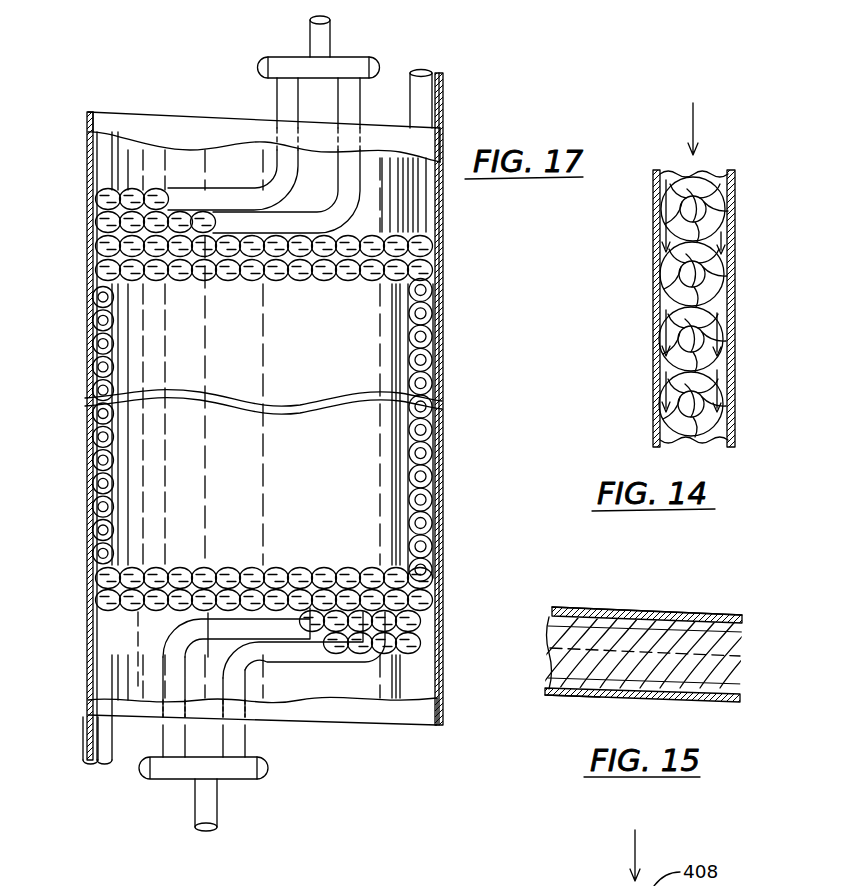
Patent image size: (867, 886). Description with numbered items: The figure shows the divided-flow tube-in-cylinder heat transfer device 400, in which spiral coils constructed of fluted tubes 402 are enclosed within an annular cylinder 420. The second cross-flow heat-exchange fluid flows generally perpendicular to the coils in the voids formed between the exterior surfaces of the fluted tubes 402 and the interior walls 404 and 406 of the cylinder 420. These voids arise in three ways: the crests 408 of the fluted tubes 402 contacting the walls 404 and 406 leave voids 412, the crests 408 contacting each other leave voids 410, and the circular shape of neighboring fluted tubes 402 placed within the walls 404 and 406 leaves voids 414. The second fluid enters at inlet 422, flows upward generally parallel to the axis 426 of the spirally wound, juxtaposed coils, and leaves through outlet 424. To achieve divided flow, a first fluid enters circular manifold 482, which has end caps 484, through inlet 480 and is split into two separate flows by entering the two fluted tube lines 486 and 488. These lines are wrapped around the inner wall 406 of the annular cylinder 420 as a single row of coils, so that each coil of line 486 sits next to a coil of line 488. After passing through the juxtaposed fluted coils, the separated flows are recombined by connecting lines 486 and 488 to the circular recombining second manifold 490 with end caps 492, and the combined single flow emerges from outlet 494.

In FIG. 17, the divided-flow tube-in-cylinder heat transfer device 400 is at (462, 383).
In FIG. 17, the fluted tubes 402 is at (305, 575).
In FIG. 14, the fluted tubes 402 is at (718, 268).
In FIG. 15, the fluted tubes 402 is at (724, 652).
In FIG. 17, the interior wall of the annular cylinder 404 is at (443, 320).
In FIG. 14, the interior wall of the annular cylinder 404 is at (732, 221).
In FIG. 15, the interior wall of the annular cylinder 404 is at (670, 698).
In FIG. 17, the inner wall of the annular cylinder 406 is at (404, 433).
In FIG. 14, the inner wall of the annular cylinder 406 is at (653, 226).
In FIG. 15, the inner wall of the annular cylinder 406 is at (652, 608).
In FIG. 14, the crests of the fluted tubes 408 is at (734, 312).
In FIG. 15, the crests of the fluted tubes 408 is at (585, 588).
In FIG. 17, the voids formed by crests contacting each other 410 is at (97, 578).
In FIG. 15, the voids formed by crests contacting the walls 412 is at (576, 690).
In FIG. 17, the voids formed by circular tube shape 414 is at (433, 349).
In FIG. 14, the voids formed by circular tube shape 414 is at (722, 376).
In FIG. 17, the annular cylinder 420 is at (352, 720).
In FIG. 17, the inlet 422 is at (85, 721).
In FIG. 17, the outlet 424 is at (443, 99).
In FIG. 17, the axis of the coils 426 is at (268, 343).
In FIG. 17, the inlet 480 is at (322, 45).
In FIG. 17, the circular manifold 482 is at (286, 60).
In FIG. 17, the end caps 484 is at (262, 63).
In FIG. 17, the fluted tube line 486 is at (283, 97).
In FIG. 17, the fluted tube line 488 is at (352, 97).
In FIG. 17, the circular recombining second manifold 490 is at (188, 779).
In FIG. 17, the end caps 492 is at (263, 772).
In FIG. 17, the outlet 494 is at (205, 826).